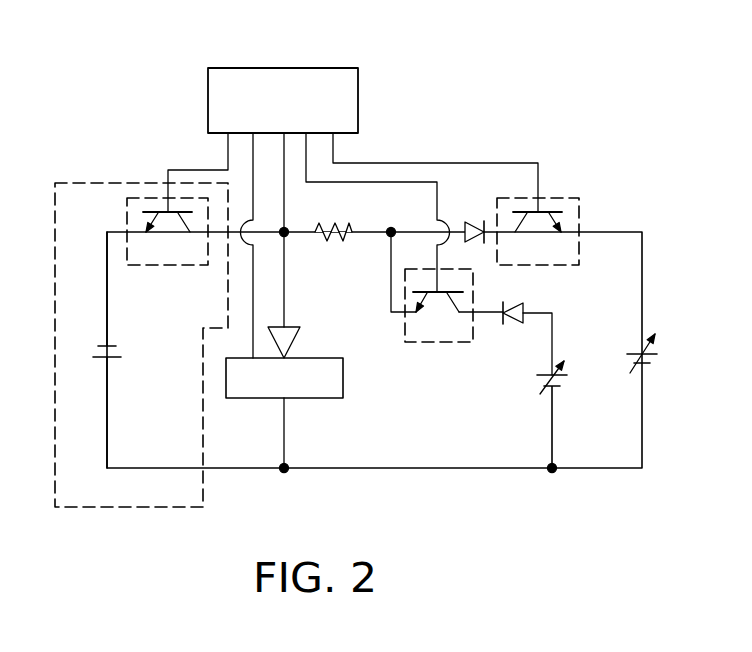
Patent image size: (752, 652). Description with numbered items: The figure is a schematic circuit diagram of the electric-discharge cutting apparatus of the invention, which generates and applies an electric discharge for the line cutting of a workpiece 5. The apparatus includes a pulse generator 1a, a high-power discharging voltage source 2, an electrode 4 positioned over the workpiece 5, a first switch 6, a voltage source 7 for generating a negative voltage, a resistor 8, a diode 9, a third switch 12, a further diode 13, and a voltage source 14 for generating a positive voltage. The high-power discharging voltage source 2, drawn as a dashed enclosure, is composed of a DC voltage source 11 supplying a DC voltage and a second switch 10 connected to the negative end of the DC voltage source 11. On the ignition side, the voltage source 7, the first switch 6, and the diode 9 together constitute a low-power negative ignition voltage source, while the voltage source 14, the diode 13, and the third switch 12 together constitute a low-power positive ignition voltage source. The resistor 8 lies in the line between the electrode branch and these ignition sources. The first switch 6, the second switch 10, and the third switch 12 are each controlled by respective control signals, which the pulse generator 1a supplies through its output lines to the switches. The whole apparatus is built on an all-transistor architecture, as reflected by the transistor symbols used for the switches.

The pulse generator 1a is at (279, 68).
The high-power discharging voltage source 2 is at (84, 183).
The electrode 4 is at (285, 283).
The workpiece 5 is at (265, 400).
The switch S1 6 is at (552, 196).
The voltage source 7 is at (653, 350).
The resistor 8 is at (323, 237).
The diode 9 is at (479, 228).
The switch S2 10 is at (138, 267).
The DC voltage source 11 is at (93, 348).
The switch S3 12 is at (423, 344).
The diode 13 is at (512, 322).
The voltage source 14 is at (545, 385).